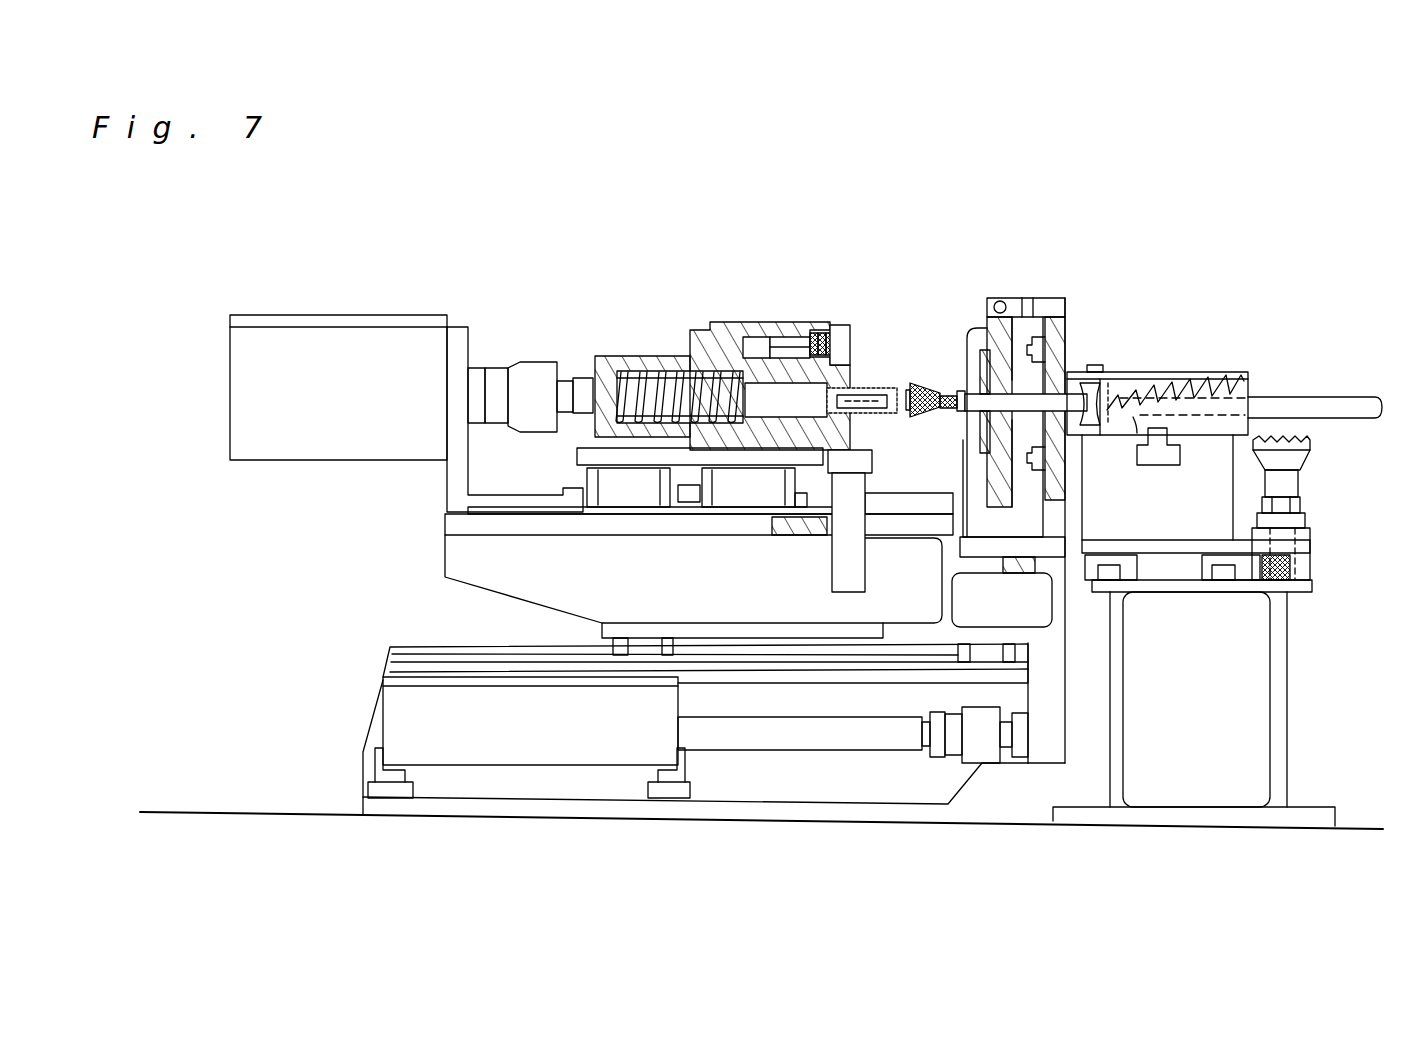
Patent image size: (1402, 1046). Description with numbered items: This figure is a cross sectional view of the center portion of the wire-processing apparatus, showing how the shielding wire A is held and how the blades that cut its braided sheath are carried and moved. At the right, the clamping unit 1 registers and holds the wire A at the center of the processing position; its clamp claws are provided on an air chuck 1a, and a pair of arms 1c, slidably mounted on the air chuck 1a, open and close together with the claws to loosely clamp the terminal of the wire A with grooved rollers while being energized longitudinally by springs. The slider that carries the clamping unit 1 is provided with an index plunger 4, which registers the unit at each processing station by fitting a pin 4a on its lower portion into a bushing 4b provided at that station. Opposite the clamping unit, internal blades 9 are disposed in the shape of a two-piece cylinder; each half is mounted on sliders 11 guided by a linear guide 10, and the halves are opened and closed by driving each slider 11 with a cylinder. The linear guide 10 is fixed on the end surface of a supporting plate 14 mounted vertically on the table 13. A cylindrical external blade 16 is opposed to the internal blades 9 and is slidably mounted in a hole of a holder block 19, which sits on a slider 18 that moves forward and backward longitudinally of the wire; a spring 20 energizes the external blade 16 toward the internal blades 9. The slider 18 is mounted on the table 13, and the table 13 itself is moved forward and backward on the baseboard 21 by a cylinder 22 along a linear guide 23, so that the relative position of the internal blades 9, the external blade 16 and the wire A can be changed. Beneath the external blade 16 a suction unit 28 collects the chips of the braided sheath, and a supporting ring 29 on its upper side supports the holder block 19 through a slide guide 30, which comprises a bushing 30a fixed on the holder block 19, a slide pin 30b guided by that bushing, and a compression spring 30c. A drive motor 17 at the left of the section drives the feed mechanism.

The clamping unit 1 is at (1192, 359).
The air chuck 1a is at (1165, 510).
The arms 1c is at (1113, 375).
The shielding wire A is at (1324, 394).
The index plunger 4 is at (1305, 473).
The pin 4a is at (1312, 560).
The bushing 4b is at (1295, 583).
The internal blades 9 is at (963, 390).
The linear guide 10 is at (1035, 343).
The sliders 11 is at (967, 323).
The table 13 is at (458, 522).
The supporting plate 14 is at (1067, 333).
The external blade 16 is at (870, 398).
The motor 17 is at (355, 350).
The slider 18 is at (590, 455).
The holder block 19 is at (720, 325).
The spring 20 is at (632, 365).
The baseboard 21 is at (365, 803).
The cylinder 22 is at (405, 705).
The linear guide 23 is at (463, 648).
The suction unit 28 is at (832, 553).
The supporting ring 29 is at (850, 332).
The slide guide 30 is at (908, 205).
The bushing 30a is at (812, 333).
The slide pin 30b is at (821, 333).
The compression spring 30c is at (830, 333).